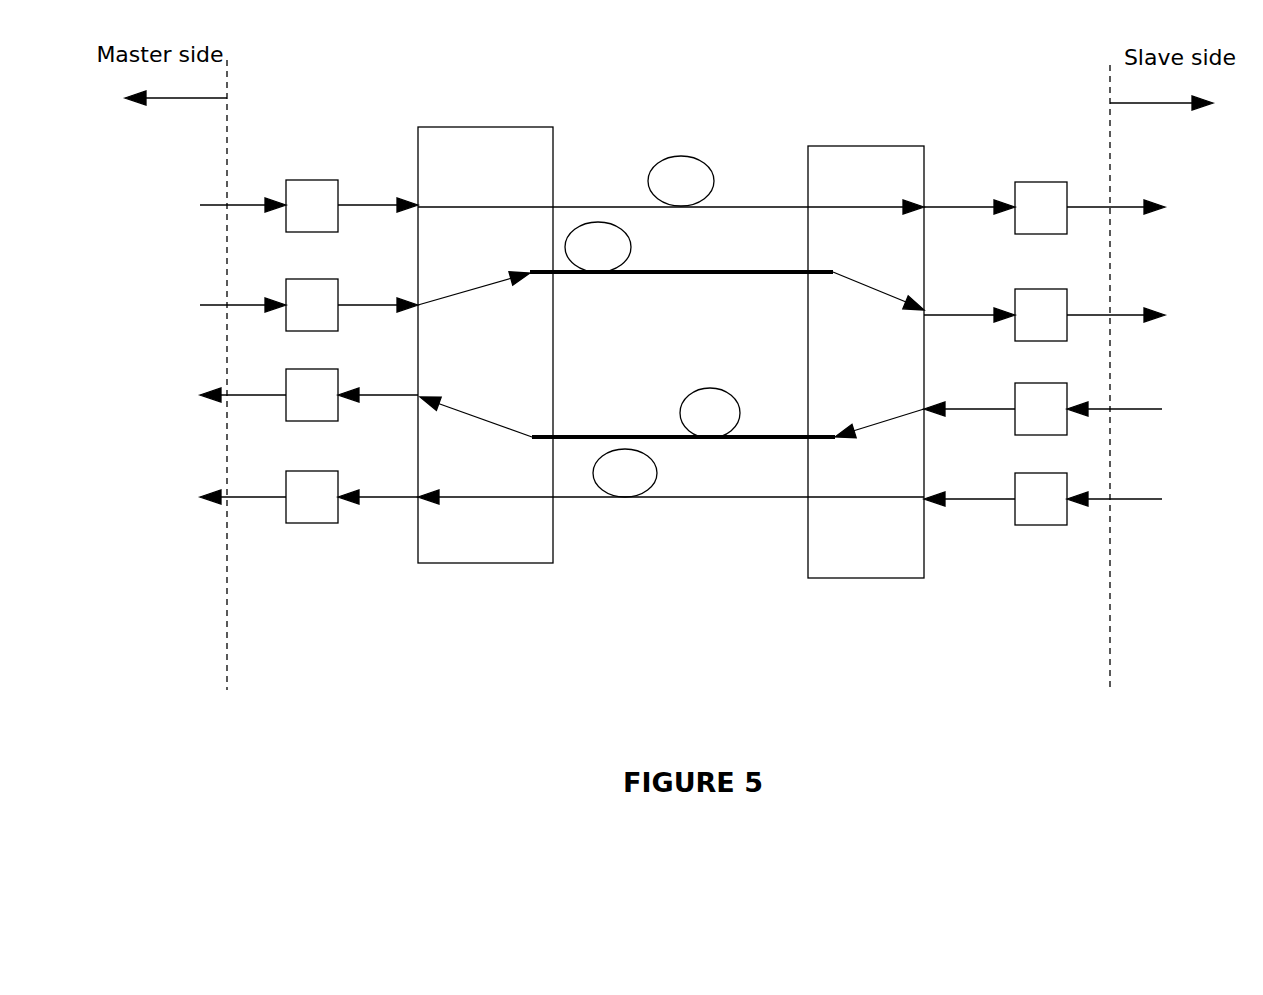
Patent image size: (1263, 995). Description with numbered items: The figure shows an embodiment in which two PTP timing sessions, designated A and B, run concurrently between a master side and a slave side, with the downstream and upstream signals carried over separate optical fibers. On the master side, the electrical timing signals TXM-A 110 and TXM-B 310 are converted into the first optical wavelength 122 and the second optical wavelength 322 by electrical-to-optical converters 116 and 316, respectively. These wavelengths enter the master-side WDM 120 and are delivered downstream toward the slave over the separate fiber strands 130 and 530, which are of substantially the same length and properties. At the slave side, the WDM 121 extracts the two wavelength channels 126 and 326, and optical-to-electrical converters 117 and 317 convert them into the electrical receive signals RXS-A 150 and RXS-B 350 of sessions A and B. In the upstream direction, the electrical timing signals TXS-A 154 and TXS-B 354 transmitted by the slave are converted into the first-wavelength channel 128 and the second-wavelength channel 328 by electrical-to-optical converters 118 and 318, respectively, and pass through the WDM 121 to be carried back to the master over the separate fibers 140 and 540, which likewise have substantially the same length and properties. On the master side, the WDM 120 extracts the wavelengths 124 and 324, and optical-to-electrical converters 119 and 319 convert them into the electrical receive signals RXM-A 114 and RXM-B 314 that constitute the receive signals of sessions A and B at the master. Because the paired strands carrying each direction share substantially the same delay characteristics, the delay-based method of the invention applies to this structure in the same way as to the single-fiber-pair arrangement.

The TXM-A 110 is at (197, 205).
The electrical-to-optical converter 116 is at (285, 181).
The optical wavelength λ1 122 is at (372, 196).
The WDM 120 is at (510, 194).
The TXM-B 310 is at (197, 306).
The electrical-to-optical converter 316 is at (285, 281).
The optical wavelength λ2 322 is at (365, 318).
The RXM-B 314 is at (197, 390).
The optical-to-electrical converter 319 is at (285, 376).
The optical wavelength λ2 324 is at (400, 415).
The RXM-A 114 is at (197, 489).
The optical-to-electrical converter 119 is at (285, 477).
The optical wavelength λ1 124 is at (377, 505).
The optical fiber strand 130 is at (763, 207).
The fiber strand 530 is at (651, 265).
The fiber strand 540 is at (665, 435).
The optical fiber strand 140 is at (745, 505).
The WDM 121 is at (890, 571).
The optical wavelength channel 126 is at (970, 200).
The optical-to-electrical converter 117 is at (1067, 190).
The RXS-A 150 is at (1156, 206).
The optical wavelength λ2 326 is at (953, 318).
The optical-to-electrical converter 317 is at (1067, 296).
The RXS-B 350 is at (1155, 315).
The optical wavelength λ2 328 is at (980, 408).
The electrical-to-optical converter 318 is at (1067, 390).
The TXS-B 354 is at (1155, 413).
The optical wavelength λ1 128 is at (982, 505).
The electrical-to-optical converter 118 is at (1067, 490).
The TXS-A 154 is at (1155, 498).